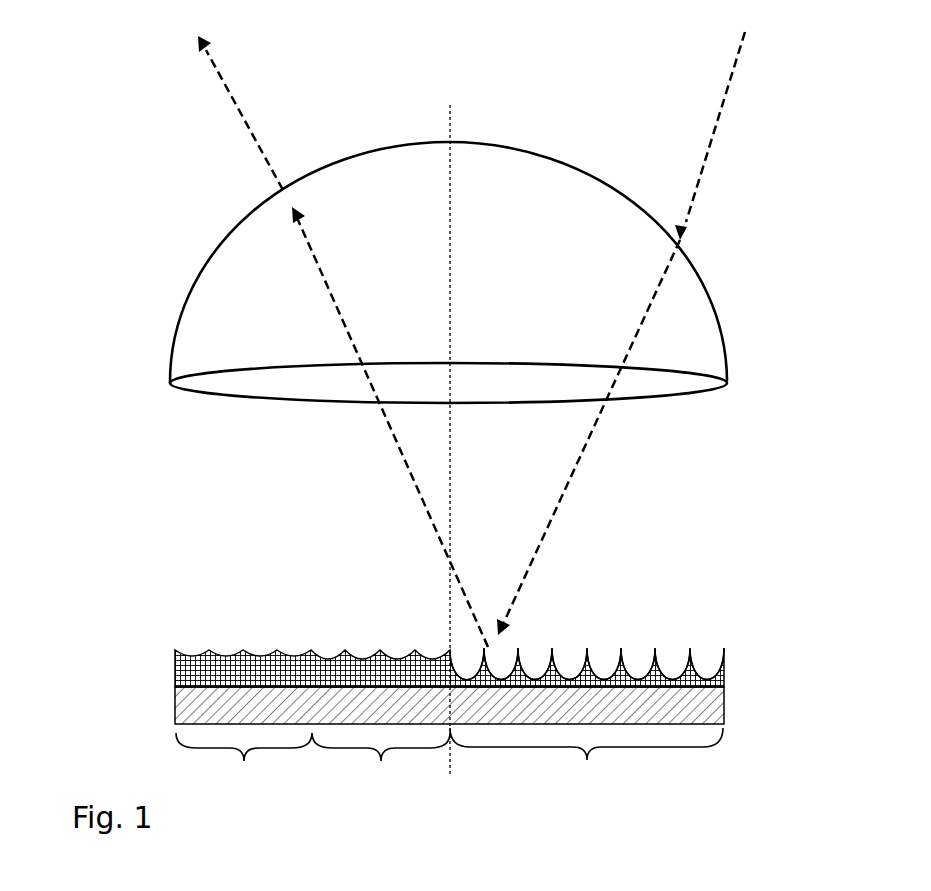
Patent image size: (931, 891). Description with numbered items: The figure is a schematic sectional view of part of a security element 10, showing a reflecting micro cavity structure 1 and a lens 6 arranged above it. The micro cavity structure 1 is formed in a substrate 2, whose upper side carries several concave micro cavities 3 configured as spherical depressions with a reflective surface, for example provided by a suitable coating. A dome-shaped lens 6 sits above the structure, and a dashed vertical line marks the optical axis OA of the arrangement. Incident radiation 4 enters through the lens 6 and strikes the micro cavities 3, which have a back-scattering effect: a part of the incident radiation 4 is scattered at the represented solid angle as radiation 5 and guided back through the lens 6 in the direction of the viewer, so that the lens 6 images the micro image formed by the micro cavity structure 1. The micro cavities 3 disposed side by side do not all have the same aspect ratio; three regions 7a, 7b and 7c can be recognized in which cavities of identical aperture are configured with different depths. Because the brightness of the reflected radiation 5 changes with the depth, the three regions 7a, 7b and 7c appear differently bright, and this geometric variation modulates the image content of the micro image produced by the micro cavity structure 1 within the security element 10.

The security element 10 is at (122, 396).
The optical axis OA is at (448, 107).
The lens 6 is at (218, 253).
The incident radiation 4 is at (560, 508).
The radiation 5 is at (438, 532).
The micro cavity structure 1 is at (175, 673).
The substrate 2 is at (725, 697).
The micro cavities 3 is at (700, 655).
The region 7a is at (244, 774).
The region 7b is at (381, 774).
The region 7c is at (586, 772).